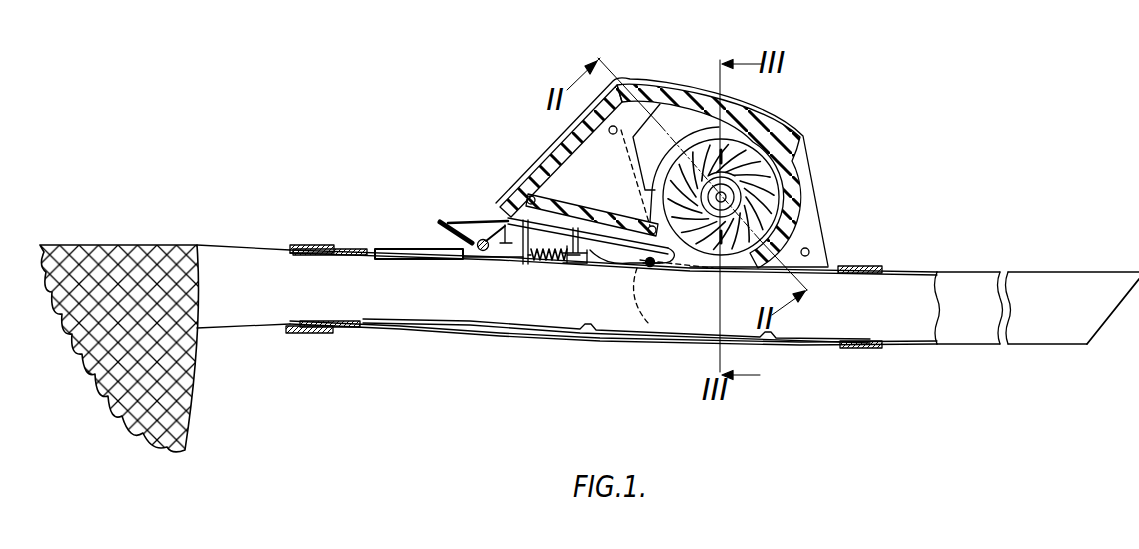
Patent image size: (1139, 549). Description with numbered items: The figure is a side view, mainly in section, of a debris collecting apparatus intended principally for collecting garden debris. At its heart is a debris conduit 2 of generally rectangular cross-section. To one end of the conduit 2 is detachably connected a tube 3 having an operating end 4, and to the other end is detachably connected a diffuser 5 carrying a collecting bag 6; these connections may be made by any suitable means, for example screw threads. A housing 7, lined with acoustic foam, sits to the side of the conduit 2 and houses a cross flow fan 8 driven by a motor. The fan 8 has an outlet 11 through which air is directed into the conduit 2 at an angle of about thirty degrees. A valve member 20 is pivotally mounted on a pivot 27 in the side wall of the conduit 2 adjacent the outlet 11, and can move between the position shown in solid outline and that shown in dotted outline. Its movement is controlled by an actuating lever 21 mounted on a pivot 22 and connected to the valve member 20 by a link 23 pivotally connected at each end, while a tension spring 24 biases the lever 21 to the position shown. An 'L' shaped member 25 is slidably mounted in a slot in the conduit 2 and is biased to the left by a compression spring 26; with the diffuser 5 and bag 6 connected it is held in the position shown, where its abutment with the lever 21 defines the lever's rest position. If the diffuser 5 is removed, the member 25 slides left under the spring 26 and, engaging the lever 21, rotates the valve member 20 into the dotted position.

The debris conduit 2 is at (343, 297).
The tube 3 is at (921, 345).
The operating end 4 is at (1117, 318).
The diffuser 5 is at (256, 327).
The collecting bag 6 is at (180, 408).
The housing 7 is at (667, 88).
The cross flow fan 8 is at (760, 160).
The outlet 11 is at (712, 266).
The valve member 20 is at (612, 256).
The actuating lever 21 is at (450, 221).
The pivot 22 is at (482, 238).
The link 23 is at (590, 232).
The tension spring 24 is at (522, 236).
The 'L' shaped member 25 is at (470, 262).
The compression spring 26 is at (553, 263).
The pivot 27 is at (652, 268).